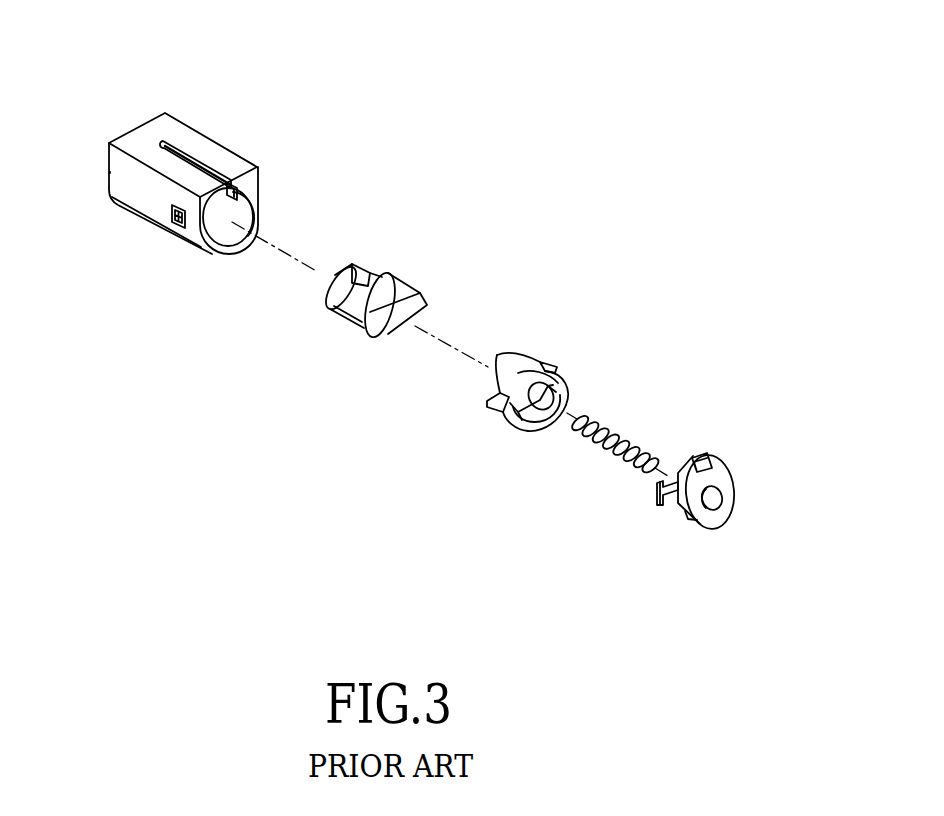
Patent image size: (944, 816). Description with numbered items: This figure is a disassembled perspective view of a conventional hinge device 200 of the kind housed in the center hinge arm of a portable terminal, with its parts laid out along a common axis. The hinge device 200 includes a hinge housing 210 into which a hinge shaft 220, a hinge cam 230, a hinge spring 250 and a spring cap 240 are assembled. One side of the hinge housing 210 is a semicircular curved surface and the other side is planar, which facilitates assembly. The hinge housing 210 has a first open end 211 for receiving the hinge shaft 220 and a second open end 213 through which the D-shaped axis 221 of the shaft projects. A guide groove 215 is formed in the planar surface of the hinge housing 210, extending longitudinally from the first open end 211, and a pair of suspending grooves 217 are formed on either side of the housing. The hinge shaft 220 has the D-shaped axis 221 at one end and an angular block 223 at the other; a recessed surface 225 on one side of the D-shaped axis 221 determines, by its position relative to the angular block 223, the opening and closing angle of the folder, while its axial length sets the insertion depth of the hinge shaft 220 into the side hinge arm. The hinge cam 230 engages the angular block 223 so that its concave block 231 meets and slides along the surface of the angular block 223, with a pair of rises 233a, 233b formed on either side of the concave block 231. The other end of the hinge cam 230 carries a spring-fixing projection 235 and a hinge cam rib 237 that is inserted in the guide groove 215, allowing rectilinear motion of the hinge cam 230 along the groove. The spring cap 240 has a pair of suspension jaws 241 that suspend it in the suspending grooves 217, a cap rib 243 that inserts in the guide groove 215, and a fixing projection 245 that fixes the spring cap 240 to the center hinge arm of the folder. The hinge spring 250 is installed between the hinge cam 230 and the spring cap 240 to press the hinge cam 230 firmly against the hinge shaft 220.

The hinge device 200 is at (508, 38).
The hinge housing 210 is at (185, 142).
The first open end 211 is at (258, 188).
The second open end 213 is at (110, 172).
The guide groove 215 is at (212, 163).
The suspending grooves 217 is at (171, 214).
The hinge shaft 220 is at (375, 260).
The D-shaped axis 221 is at (330, 305).
The angular block 223 is at (412, 305).
The recessed surface 225 is at (355, 268).
The hinge cam 230 is at (520, 353).
The concave block 231 is at (490, 386).
The rise 233a is at (492, 405).
The rise 233b is at (513, 362).
The spring-fixing projection 235 is at (560, 393).
The hinge cam rib 237 is at (553, 360).
The spring cap 240 is at (695, 444).
The suspension jaws 241 is at (657, 493).
The cap rib 243 is at (700, 455).
The fixing projection 245 is at (728, 502).
The hinge spring 250 is at (645, 422).